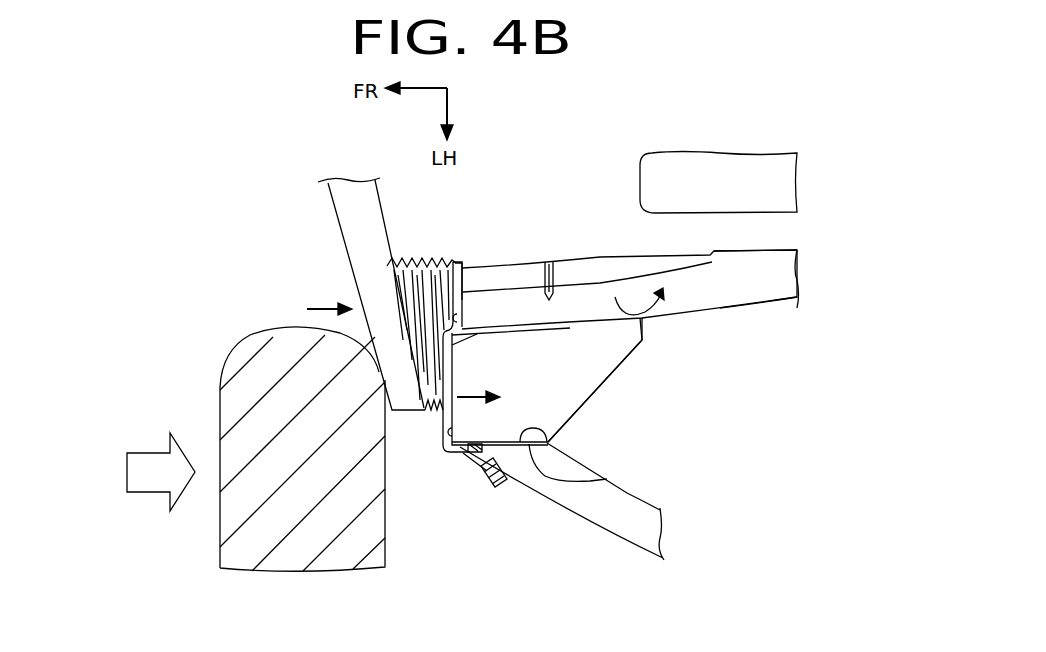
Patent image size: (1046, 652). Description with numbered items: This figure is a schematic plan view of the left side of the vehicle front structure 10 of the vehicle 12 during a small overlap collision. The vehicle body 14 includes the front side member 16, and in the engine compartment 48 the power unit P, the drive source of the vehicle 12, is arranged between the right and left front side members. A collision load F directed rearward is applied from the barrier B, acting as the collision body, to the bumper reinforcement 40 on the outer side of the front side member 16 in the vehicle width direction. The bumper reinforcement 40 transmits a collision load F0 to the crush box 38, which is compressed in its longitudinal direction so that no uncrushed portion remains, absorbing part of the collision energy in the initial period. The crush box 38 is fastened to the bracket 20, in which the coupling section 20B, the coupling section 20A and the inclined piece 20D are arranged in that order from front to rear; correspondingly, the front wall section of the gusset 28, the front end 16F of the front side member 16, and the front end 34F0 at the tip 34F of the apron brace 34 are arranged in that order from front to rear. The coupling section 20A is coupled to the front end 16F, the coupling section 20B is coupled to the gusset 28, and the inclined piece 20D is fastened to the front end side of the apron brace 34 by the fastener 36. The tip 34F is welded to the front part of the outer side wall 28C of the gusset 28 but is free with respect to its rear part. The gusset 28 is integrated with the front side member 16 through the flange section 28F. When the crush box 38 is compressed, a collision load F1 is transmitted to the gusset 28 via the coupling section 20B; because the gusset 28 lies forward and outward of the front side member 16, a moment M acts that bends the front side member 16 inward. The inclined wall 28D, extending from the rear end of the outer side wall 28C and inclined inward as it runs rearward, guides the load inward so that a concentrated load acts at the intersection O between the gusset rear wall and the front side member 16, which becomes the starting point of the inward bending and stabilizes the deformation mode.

The vehicle 12 is at (263, 181).
The bumper reinforcement 40 is at (348, 217).
The barrier B is at (250, 340).
The collision load F0 is at (322, 308).
The collision load F is at (147, 480).
The collision load F1 is at (470, 396).
The crush box 38 is at (422, 258).
The bracket 20 is at (458, 258).
The coupling section 20A is at (463, 272).
The coupling section 20B is at (453, 353).
The inclined piece 20D is at (476, 460).
The front side member 16 is at (610, 258).
The front end of front side member 16F is at (458, 319).
The vehicle body 14 is at (783, 305).
The engine compartment 48 is at (562, 222).
The power unit P is at (712, 161).
The moment M is at (630, 318).
The intersection O is at (642, 318).
The gusset 28 is at (580, 414).
The flange section 28F is at (452, 432).
The inclined wall 28D is at (588, 400).
The outer side wall 28C is at (607, 480).
The apron brace 34 is at (588, 522).
The tip of apron brace 34F is at (557, 443).
The front end of apron brace tip 34F0 is at (470, 452).
The fastener 36 is at (493, 483).
The vehicle front structure 10 is at (440, 530).